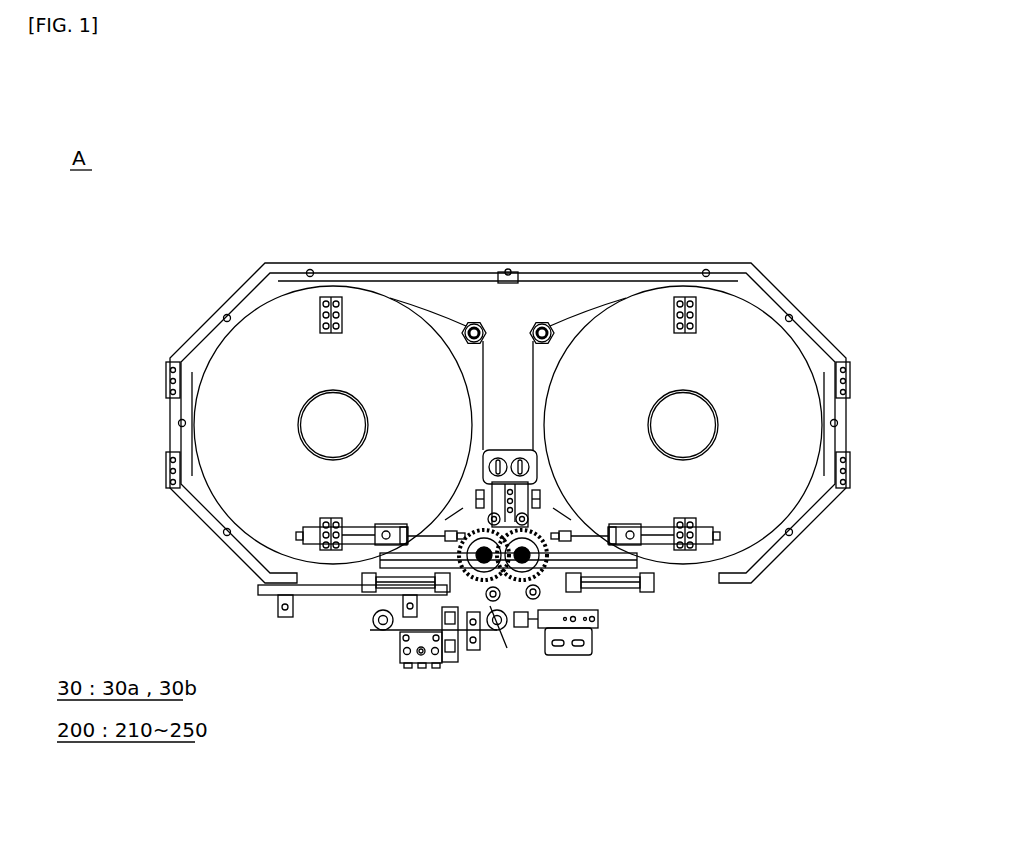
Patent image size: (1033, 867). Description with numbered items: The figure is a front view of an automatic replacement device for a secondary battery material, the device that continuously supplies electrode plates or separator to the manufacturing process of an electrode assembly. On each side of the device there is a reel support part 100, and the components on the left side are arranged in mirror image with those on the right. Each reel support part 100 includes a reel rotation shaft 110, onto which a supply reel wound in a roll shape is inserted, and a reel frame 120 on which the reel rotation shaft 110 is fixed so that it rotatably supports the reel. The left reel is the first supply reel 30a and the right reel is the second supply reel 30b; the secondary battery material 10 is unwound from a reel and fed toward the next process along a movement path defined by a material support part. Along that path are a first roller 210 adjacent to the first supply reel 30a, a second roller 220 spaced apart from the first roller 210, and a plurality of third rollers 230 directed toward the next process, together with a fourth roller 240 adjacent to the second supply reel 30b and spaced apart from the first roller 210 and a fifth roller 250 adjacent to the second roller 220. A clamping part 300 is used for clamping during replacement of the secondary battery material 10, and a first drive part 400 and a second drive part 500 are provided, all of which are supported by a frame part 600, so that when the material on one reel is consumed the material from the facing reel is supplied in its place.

The reel support part 100 is at (737, 188).
The reel rotation shaft 110 is at (686, 394).
The reel frame 120 is at (651, 272).
The secondary battery material 10 is at (553, 322).
The first supply reel 30a is at (312, 392).
The second supply reel 30b is at (707, 387).
The first roller 210 is at (438, 312).
The second roller 220 is at (492, 450).
The third rollers 230 is at (495, 631).
The fourth roller 240 is at (579, 310).
The fifth roller 250 is at (524, 450).
The clamping part 300 is at (534, 600).
The first drive part 400 is at (369, 596).
The second drive part 500 is at (345, 554).
The frame part 600 is at (511, 478).